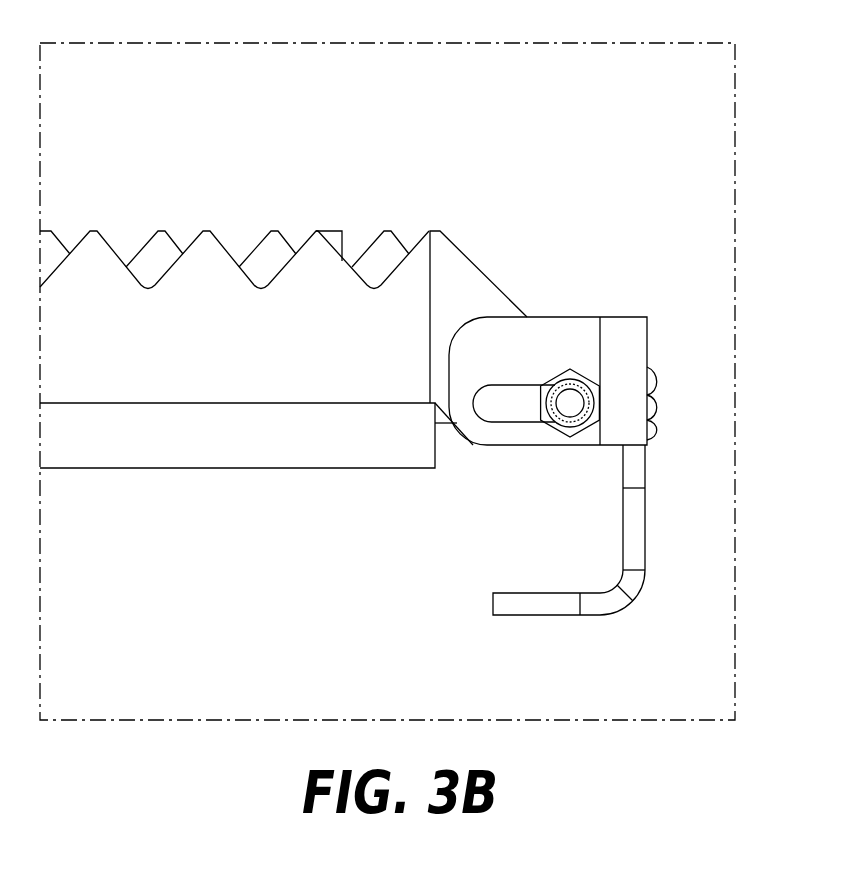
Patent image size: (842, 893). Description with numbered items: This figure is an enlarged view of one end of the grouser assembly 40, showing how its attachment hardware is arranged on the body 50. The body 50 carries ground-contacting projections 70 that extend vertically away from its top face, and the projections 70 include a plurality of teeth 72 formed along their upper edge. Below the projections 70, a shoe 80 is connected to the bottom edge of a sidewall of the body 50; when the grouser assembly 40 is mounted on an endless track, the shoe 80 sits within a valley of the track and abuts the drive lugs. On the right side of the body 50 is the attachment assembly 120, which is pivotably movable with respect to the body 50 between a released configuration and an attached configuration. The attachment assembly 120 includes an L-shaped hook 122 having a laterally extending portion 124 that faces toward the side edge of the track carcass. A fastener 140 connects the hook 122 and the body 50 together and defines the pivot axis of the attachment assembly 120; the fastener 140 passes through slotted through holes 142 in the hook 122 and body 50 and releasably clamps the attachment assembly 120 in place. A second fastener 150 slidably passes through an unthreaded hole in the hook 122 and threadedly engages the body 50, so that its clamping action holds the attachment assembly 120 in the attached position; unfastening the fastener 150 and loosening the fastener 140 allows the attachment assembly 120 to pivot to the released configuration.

The grouser assembly 40 is at (177, 132).
The body 50 is at (227, 338).
The teeth 72 is at (319, 250).
The ground-contacting projections 70 is at (331, 283).
The slotted through holes 142 is at (512, 400).
The fastener 140 is at (566, 398).
The fastener 150 is at (657, 400).
The shoes 80 is at (293, 455).
The attachment assembly 120 is at (651, 568).
The hook 122 is at (632, 530).
The laterally extending portion 124 is at (535, 603).